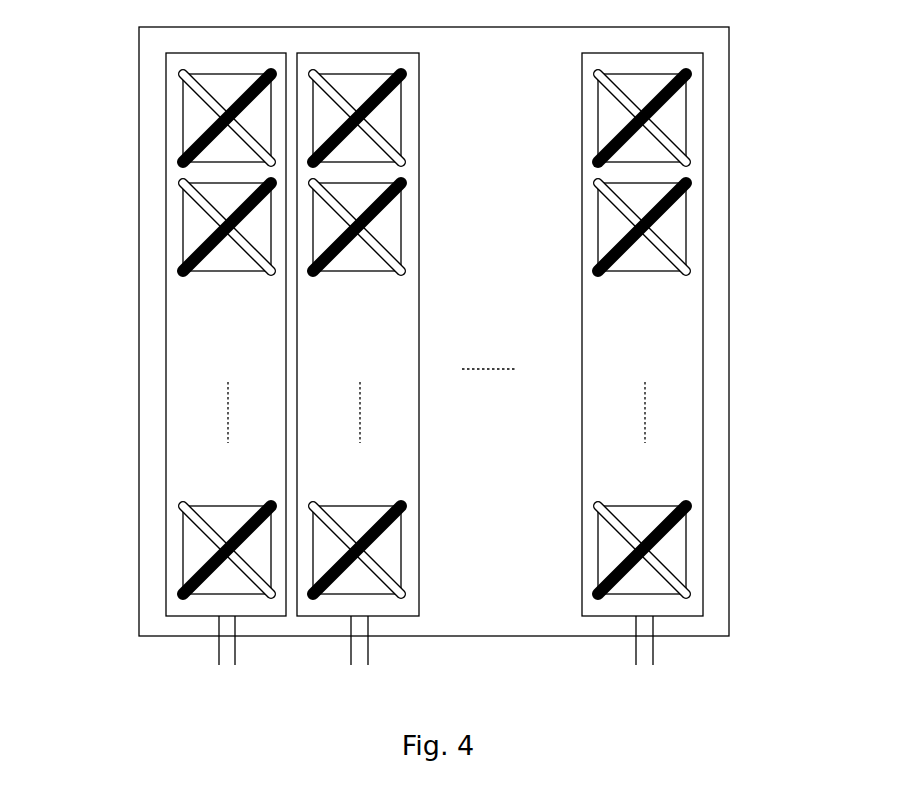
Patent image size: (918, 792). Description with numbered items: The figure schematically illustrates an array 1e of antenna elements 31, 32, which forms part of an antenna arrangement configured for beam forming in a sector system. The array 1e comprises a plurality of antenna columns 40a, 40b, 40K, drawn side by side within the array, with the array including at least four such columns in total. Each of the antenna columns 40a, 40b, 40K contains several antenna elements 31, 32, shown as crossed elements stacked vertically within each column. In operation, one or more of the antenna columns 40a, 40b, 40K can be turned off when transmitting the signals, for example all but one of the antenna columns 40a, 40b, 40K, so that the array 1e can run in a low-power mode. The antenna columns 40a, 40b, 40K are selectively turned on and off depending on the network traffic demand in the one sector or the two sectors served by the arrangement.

The array 1e is at (730, 183).
The antenna column 40a is at (167, 383).
The antenna column 40b is at (420, 418).
The antenna column 40K is at (707, 388).
The antenna element 31 is at (667, 580).
The antenna element 32 is at (683, 528).